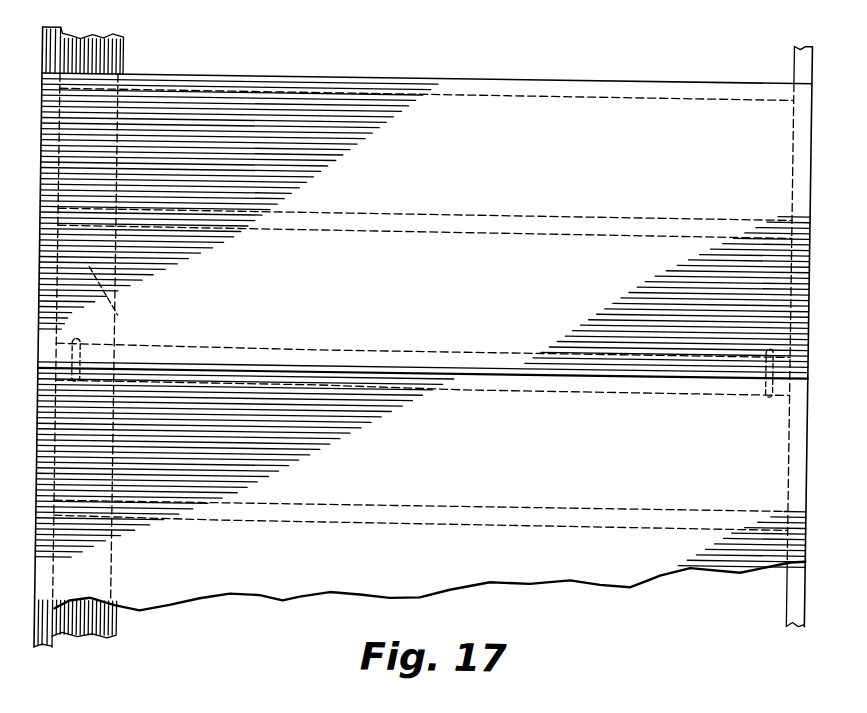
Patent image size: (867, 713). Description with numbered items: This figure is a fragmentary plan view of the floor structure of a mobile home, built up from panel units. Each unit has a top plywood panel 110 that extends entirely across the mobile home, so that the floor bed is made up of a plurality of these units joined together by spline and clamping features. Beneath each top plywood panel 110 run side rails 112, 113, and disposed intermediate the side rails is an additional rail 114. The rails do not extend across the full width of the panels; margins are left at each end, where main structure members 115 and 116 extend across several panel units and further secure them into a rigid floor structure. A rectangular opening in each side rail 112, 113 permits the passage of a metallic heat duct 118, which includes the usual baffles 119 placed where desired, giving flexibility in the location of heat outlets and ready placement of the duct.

The top plywood panel 110 is at (572, 180).
The side rail 112 is at (527, 91).
The side rail 113 is at (496, 346).
The additional rail 114 is at (544, 226).
The main structure member 115 is at (42, 27).
The main structure member 116 is at (794, 47).
The metallic heat duct 118 is at (110, 53).
The baffle 119 is at (123, 289).